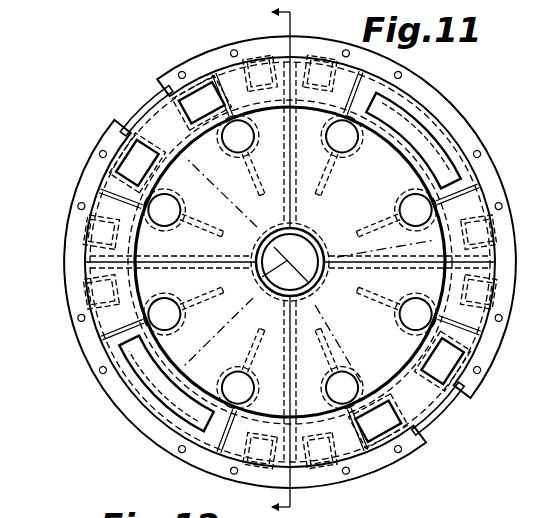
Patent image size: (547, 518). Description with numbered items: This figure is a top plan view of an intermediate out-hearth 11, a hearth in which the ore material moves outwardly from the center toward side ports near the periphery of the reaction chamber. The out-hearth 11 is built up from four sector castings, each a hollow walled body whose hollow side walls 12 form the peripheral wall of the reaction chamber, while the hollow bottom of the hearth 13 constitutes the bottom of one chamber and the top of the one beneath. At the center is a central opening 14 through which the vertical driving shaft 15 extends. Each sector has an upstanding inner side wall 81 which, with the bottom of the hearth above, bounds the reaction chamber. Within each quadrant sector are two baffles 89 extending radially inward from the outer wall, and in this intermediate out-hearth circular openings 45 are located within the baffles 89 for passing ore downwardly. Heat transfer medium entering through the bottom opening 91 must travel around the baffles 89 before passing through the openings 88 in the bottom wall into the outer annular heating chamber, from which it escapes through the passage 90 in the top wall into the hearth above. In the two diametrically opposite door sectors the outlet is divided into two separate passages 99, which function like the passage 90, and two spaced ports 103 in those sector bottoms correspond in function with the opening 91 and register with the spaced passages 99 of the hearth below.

The out-hearth 11 is at (236, 38).
The hollow side walls 12 is at (270, 263).
The hollow bottom of hearth 13 is at (133, 102).
The central opening 14 is at (513, 233).
The vertical driving shaft 15 is at (73, 346).
The circular openings 45 is at (290, 262).
The inner side wall 81 is at (408, 164).
The openings 88 is at (110, 283).
The baffles 89 is at (250, 172).
The passage 90 is at (281, 260).
The opening 91 is at (416, 136).
The separate passages 99 is at (290, 261).
The spaced ports 103 is at (470, 356).